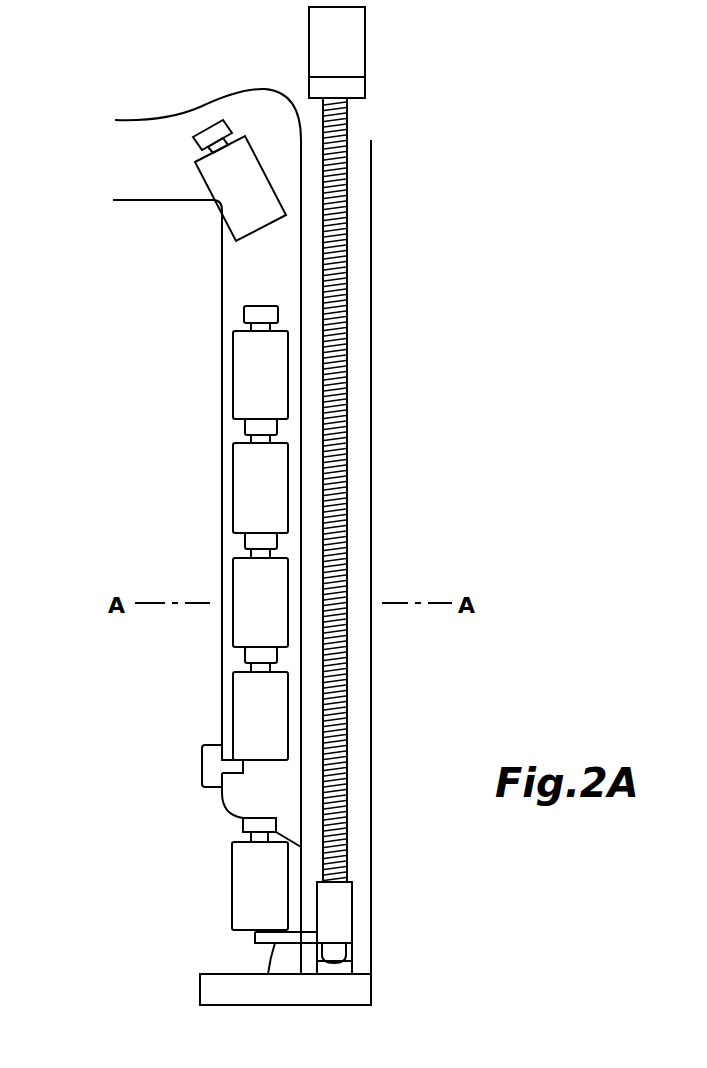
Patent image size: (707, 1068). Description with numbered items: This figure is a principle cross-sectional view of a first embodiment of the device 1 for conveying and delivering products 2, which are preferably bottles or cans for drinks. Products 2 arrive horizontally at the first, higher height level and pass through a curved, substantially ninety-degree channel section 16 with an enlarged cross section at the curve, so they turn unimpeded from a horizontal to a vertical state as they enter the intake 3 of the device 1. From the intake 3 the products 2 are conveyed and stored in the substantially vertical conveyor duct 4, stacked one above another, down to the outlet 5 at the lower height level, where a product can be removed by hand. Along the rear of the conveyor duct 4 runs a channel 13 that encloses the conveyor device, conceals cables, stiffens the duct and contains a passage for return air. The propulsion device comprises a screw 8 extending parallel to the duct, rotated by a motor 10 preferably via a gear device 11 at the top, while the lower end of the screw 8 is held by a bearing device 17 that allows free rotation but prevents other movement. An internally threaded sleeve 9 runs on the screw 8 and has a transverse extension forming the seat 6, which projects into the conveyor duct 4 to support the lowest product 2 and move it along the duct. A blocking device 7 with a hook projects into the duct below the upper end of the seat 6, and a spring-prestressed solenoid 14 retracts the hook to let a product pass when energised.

The device 1 is at (428, 214).
The product 2 is at (233, 370).
The intake 3 is at (130, 159).
The conveyor duct 4 is at (222, 467).
The outlet 5 is at (221, 800).
The seat 6 is at (273, 975).
The blocking device 7 is at (236, 776).
The screw 8 is at (348, 413).
The sleeve 9 is at (353, 900).
The motor 10 is at (366, 30).
The gear device 11 is at (366, 88).
The channel 13 is at (372, 735).
The spring-prestressed solenoid 14 is at (208, 765).
The channel section 16 is at (252, 90).
The bearing device 17 is at (353, 965).